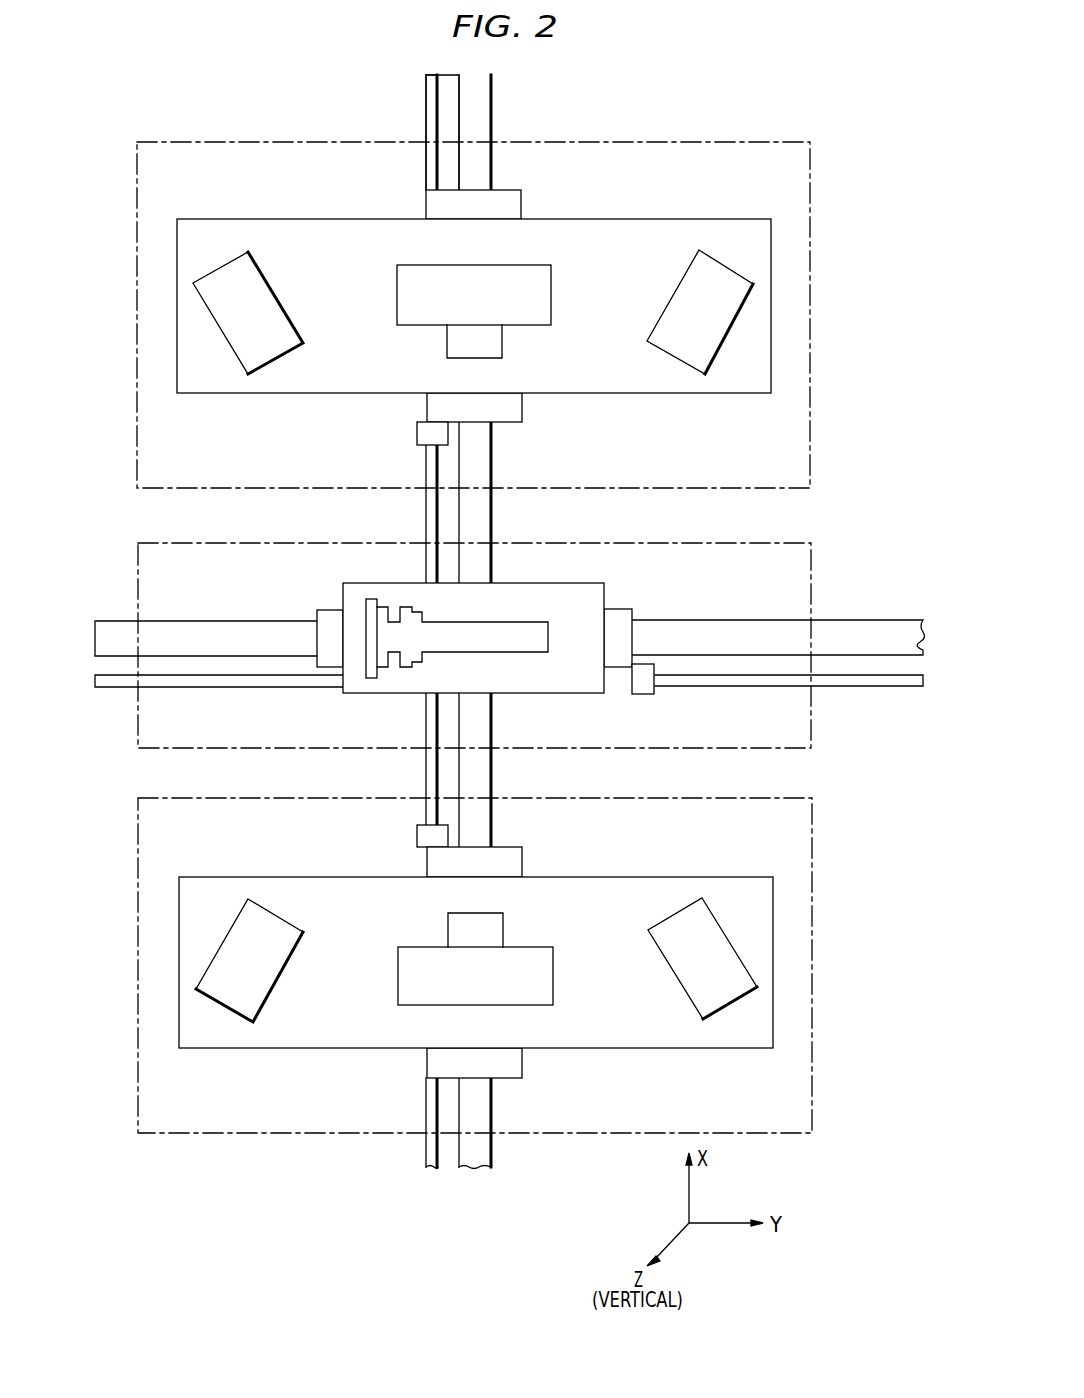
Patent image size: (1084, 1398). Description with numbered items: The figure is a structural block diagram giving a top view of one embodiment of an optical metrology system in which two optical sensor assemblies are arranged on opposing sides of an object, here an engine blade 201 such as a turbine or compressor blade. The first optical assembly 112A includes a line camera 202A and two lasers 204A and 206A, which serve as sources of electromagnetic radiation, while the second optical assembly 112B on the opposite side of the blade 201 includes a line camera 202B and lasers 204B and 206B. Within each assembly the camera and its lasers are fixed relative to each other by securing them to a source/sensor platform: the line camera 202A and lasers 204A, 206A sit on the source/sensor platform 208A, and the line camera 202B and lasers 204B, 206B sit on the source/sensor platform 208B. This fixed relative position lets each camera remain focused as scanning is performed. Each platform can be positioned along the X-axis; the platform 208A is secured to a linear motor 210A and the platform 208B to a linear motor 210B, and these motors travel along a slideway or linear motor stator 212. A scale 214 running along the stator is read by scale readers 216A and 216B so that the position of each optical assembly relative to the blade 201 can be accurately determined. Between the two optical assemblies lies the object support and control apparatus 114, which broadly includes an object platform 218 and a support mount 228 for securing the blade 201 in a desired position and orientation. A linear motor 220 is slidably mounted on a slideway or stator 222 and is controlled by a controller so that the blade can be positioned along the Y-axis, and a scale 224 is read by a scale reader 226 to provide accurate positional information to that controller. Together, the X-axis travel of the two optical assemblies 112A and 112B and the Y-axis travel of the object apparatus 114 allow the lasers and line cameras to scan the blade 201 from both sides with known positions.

The optical assembly 112A is at (506, 315).
The optical assembly 112B is at (770, 767).
The object support and control apparatus 114 is at (743, 543).
The engine blade 201 is at (468, 622).
The line camera 202A is at (397, 283).
The line camera 202B is at (440, 1007).
The laser 204A is at (295, 325).
The laser 204B is at (287, 959).
The laser 206A is at (658, 317).
The laser 206B is at (670, 968).
The source/sensor platform 208A is at (565, 217).
The source/sensor platform 208B is at (722, 1050).
The linear motor 210A is at (426, 208).
The linear motor 210B is at (525, 1065).
The linear motor stator 212 is at (478, 508).
The scale 214 is at (435, 522).
The scale reader 216A is at (425, 433).
The scale reader 216B is at (417, 835).
The object platform 218 is at (528, 694).
The linear motor 220 is at (332, 600).
The stator 222 is at (878, 620).
The scale 224 is at (858, 680).
The scale reader 226 is at (640, 683).
The support mount 228 is at (371, 678).